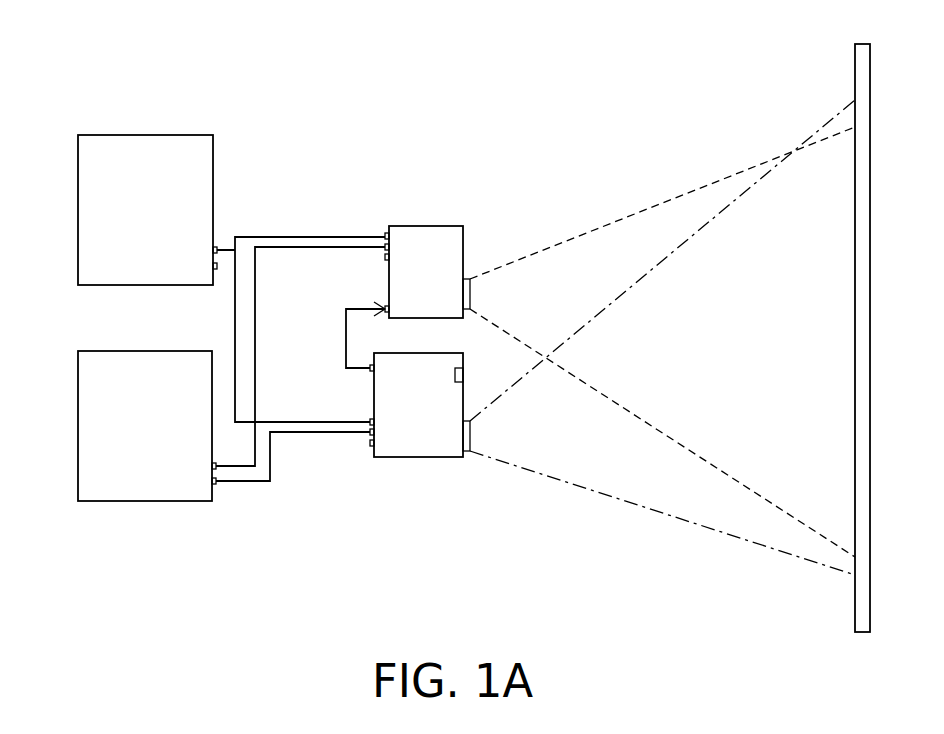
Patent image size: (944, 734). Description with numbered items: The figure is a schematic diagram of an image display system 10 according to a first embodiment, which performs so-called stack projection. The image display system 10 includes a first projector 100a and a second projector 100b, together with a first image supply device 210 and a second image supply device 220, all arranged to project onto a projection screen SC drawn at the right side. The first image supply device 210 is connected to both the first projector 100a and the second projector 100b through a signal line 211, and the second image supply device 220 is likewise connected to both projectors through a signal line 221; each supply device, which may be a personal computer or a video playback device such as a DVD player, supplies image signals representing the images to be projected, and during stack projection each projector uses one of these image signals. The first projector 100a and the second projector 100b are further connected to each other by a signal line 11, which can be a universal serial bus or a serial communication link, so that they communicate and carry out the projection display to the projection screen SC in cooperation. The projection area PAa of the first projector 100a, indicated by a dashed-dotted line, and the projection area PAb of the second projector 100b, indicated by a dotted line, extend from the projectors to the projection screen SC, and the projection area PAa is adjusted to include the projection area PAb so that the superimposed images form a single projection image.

The image display system 10 is at (125, 62).
The first image supply device 210 is at (125, 135).
The second image supply device 220 is at (125, 351).
The signal line 211 is at (293, 236).
The signal line 221 is at (277, 248).
The signal line 11 is at (346, 327).
The second projector 100b is at (422, 226).
The first projector 100a is at (458, 458).
The projection area PAb is at (603, 225).
The projection area PAa is at (628, 500).
The projection screen SC is at (862, 44).